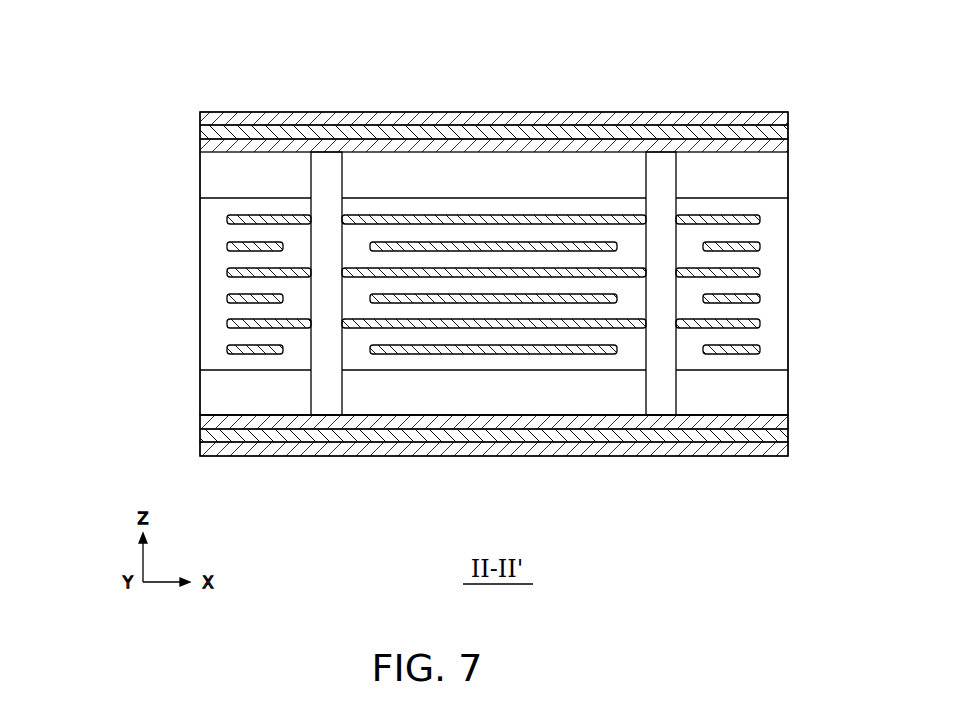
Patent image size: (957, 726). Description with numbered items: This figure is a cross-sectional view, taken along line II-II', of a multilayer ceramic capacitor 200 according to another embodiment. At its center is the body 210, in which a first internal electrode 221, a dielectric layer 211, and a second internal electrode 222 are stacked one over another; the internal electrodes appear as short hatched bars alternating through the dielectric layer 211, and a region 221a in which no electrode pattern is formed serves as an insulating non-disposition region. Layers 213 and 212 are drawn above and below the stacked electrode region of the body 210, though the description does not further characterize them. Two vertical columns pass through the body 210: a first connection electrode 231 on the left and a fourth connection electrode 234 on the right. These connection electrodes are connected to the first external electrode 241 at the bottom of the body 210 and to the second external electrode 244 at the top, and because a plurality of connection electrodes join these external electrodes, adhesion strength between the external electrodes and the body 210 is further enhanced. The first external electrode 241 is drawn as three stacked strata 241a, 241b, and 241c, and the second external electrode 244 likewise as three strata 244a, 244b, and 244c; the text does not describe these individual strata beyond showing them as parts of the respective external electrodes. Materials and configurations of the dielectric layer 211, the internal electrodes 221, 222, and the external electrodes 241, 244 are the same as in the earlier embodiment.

The multilayer ceramic capacitor 200 is at (340, 34).
The body 210 is at (473, 418).
The dielectric layer 211 is at (789, 313).
The lower cover layer 212 is at (789, 387).
The upper cover layer 213 is at (790, 172).
The first internal electrode 221 is at (228, 322).
The non-disposition region 221a is at (297, 348).
The second internal electrode 222 is at (789, 350).
The first connection electrode 231 is at (327, 156).
The fourth connection electrode 234 is at (660, 160).
The first external electrode 241 is at (424, 436).
The lower external electrode first layer 241a is at (199, 421).
The lower external electrode second layer 241b is at (199, 436).
The lower external electrode third layer 241c is at (452, 461).
The second external electrode 244 is at (424, 128).
The upper external electrode first layer 244a is at (452, 156).
The upper external electrode second layer 244b is at (199, 131).
The upper external electrode third layer 244c is at (199, 113).